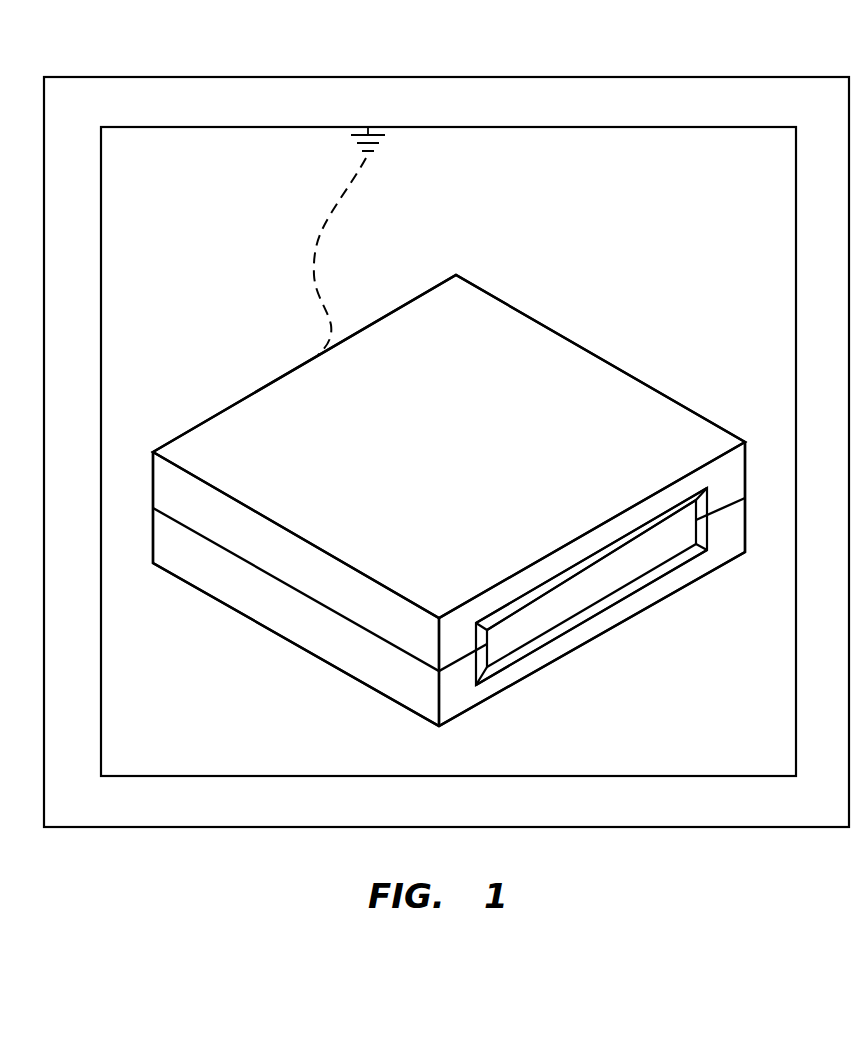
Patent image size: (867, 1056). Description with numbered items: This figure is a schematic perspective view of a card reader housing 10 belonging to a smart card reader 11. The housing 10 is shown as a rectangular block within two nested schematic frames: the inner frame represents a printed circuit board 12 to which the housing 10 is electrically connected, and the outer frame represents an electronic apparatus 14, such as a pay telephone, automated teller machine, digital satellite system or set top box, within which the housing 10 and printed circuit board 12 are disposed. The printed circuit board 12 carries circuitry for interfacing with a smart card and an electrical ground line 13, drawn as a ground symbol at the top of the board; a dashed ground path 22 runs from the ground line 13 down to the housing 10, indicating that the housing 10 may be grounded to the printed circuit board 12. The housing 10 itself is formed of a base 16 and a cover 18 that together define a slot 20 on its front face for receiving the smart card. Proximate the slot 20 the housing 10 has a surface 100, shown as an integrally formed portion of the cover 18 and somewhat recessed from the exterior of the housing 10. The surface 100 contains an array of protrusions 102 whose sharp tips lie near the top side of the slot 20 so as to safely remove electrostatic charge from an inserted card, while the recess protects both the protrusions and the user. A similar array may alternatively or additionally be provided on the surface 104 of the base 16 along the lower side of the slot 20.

The card reader housing 10 is at (617, 367).
The smart card reader 11 is at (580, 288).
The printed circuit board 12 is at (555, 127).
The electrical ground line 13 is at (387, 145).
The electronic apparatus 14 is at (680, 77).
The base 16 is at (163, 542).
The cover 18 is at (165, 482).
The slot 20 is at (627, 567).
The ground path 22 is at (333, 203).
The surface 100 is at (653, 528).
The array of protrusions 102 is at (563, 585).
The surface of base 104 is at (560, 637).